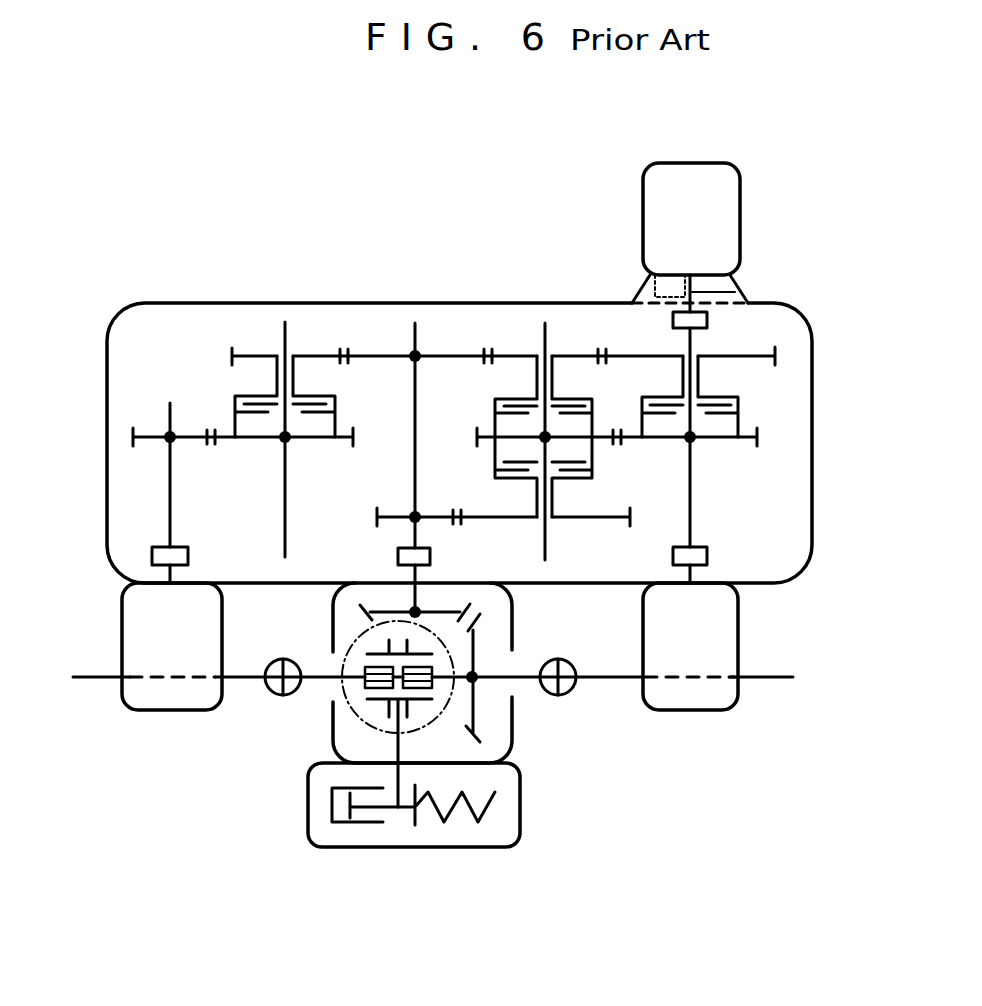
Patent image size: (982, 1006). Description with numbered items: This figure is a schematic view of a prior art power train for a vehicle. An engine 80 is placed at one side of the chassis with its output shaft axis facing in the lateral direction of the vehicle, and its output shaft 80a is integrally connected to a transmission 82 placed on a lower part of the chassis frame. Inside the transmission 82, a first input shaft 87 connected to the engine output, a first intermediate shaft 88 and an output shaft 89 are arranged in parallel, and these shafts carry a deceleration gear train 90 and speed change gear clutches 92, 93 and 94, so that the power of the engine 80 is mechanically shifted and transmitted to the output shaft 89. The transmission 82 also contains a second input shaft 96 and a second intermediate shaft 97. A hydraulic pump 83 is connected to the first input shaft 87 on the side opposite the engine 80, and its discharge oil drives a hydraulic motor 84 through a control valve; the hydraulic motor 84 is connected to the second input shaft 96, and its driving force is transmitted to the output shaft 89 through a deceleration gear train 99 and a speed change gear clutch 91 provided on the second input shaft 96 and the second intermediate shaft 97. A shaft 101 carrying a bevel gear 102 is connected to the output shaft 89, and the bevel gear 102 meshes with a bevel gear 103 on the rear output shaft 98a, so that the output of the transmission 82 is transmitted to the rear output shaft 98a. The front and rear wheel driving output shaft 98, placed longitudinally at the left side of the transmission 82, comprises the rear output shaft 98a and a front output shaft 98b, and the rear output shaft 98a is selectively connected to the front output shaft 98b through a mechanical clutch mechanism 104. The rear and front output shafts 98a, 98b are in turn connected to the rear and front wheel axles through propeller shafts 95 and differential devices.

The engine 80 is at (742, 178).
The output shaft 80a is at (742, 288).
The transmission 82 is at (183, 274).
The hydraulic pump 83 is at (738, 620).
The hydraulic motor 84 is at (122, 638).
The first input shaft 87 is at (695, 342).
The first intermediate shaft 88 is at (542, 337).
The output shaft 89 is at (412, 337).
The deceleration gear train 90 is at (787, 352).
The speed change gear clutch 91 is at (227, 404).
The speed change gear clutch 92 is at (478, 408).
The speed change gear clutch 93 is at (753, 408).
The speed change gear clutch 94 is at (482, 468).
The propeller shaft 95 is at (100, 677).
The second input shaft 96 is at (170, 495).
The second intermediate shaft 97 is at (283, 340).
The front and rear wheel driving output shaft 98 is at (520, 690).
The rear output shaft 98a is at (517, 677).
The front output shaft 98b is at (318, 665).
The deceleration gear train 99 is at (125, 427).
The shaft 101 is at (417, 593).
The bevel gear 102 is at (377, 606).
The bevel gear 103 is at (478, 638).
The mechanical clutch mechanism 104 is at (342, 722).